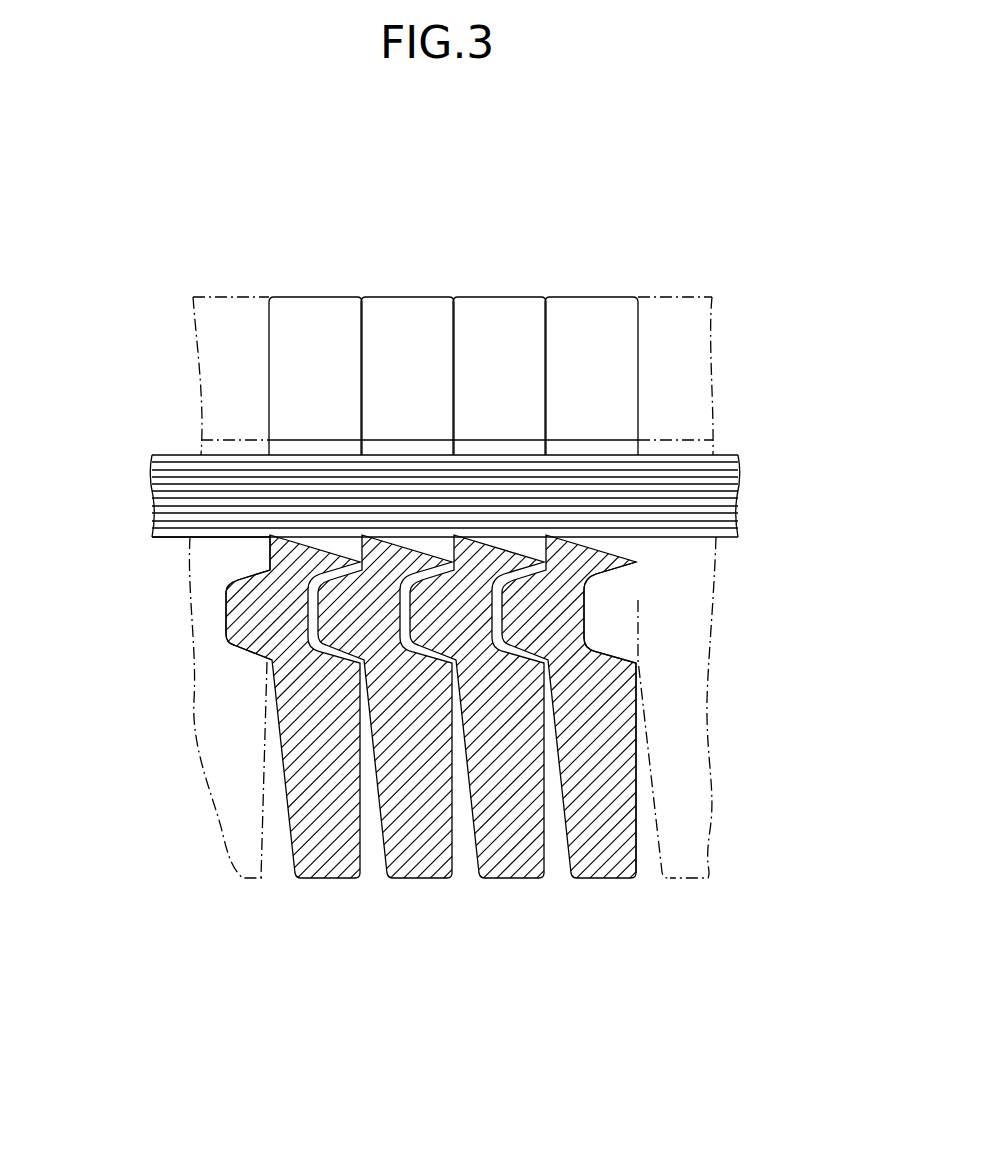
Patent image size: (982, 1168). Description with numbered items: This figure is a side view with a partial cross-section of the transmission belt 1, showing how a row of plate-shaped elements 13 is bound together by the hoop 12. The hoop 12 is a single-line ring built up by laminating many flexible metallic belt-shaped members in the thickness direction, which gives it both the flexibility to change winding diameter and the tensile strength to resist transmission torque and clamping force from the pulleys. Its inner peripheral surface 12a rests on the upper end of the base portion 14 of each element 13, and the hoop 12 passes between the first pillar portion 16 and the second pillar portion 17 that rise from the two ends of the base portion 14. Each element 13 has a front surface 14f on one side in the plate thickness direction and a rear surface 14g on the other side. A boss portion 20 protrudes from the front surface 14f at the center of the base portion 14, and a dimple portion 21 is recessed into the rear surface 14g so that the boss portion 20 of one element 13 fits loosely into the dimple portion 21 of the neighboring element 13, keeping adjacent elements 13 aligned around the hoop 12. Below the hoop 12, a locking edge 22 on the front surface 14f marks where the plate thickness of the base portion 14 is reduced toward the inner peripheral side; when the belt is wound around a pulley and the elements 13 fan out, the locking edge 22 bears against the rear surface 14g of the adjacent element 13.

The transmission belt 1 is at (722, 200).
The hoop 12 is at (722, 492).
The inner peripheral surface of the hoop 12a is at (167, 537).
The element 13 is at (491, 757).
The base portion 14 is at (323, 857).
The front surface 14f is at (270, 547).
The rear surface 14g is at (640, 683).
The first pillar portion 16 is at (453, 344).
The second pillar portion 17 is at (313, 308).
The boss portion 20 is at (237, 630).
The dimple portion 21 is at (617, 606).
The locking edge 22 is at (268, 568).